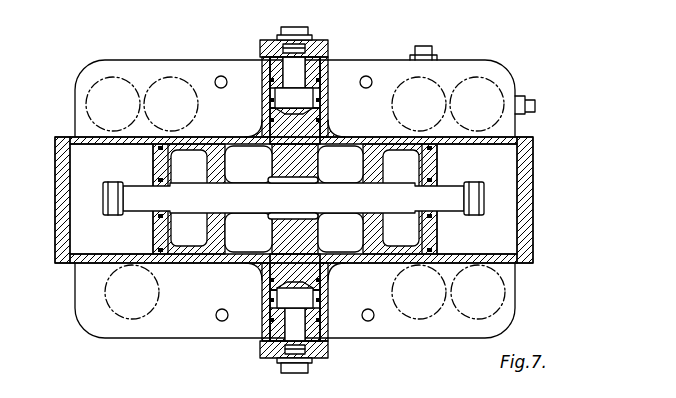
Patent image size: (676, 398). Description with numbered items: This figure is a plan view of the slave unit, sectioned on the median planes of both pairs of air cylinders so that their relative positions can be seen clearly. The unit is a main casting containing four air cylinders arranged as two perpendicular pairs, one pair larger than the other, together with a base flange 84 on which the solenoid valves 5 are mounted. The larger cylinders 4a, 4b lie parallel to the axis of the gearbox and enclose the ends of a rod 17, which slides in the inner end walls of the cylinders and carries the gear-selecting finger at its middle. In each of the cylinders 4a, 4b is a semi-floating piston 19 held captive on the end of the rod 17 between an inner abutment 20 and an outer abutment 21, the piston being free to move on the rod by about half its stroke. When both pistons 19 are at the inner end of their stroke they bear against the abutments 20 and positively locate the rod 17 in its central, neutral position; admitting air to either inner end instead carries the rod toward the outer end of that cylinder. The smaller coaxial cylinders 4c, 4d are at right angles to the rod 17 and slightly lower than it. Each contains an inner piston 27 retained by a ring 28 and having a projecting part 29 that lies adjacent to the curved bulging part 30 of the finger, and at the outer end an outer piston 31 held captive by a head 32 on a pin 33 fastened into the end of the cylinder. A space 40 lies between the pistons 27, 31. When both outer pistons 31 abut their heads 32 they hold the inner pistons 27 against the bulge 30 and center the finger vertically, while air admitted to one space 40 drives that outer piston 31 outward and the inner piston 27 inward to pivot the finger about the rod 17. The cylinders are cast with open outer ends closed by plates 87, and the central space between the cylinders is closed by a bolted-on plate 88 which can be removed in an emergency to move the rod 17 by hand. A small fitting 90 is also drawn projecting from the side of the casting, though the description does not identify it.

The solenoid valve 5 is at (160, 80).
The air cylinder 4a is at (88, 169).
The air cylinder 4b is at (470, 243).
The air cylinder 4c is at (262, 60).
The air cylinder 4d is at (325, 338).
The plate 87 is at (278, 40).
The bolted-on plate 88 is at (290, 373).
The pin 33 is at (316, 57).
The outer piston 31 is at (328, 63).
The head 32 is at (312, 93).
The space 40 is at (296, 100).
The inner piston 27 is at (266, 107).
The ring 28 is at (262, 133).
The boss fitting 90 is at (504, 95).
The outer abutment 21 is at (118, 184).
The inner abutment 20 is at (415, 188).
The semi-floating piston 19 is at (158, 233).
The curved bulging part 30 is at (273, 176).
The projecting part 29 is at (316, 158).
The rod 17 is at (248, 232).
The base flange 84 is at (174, 307).